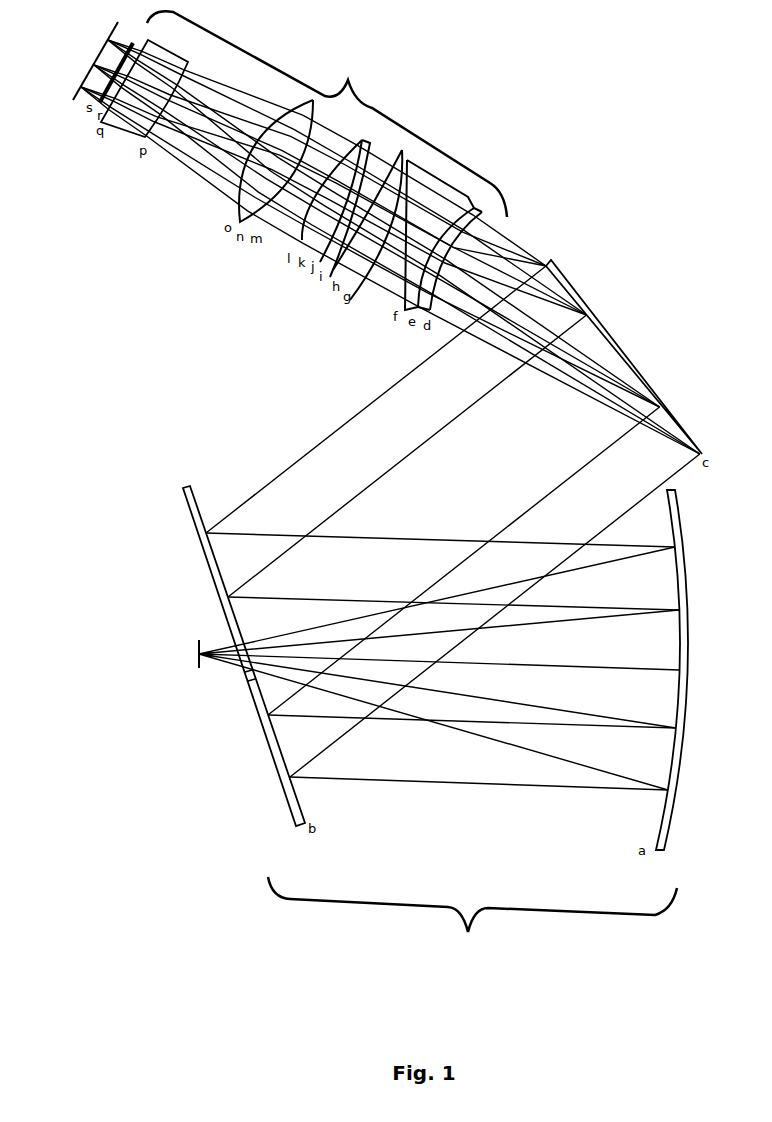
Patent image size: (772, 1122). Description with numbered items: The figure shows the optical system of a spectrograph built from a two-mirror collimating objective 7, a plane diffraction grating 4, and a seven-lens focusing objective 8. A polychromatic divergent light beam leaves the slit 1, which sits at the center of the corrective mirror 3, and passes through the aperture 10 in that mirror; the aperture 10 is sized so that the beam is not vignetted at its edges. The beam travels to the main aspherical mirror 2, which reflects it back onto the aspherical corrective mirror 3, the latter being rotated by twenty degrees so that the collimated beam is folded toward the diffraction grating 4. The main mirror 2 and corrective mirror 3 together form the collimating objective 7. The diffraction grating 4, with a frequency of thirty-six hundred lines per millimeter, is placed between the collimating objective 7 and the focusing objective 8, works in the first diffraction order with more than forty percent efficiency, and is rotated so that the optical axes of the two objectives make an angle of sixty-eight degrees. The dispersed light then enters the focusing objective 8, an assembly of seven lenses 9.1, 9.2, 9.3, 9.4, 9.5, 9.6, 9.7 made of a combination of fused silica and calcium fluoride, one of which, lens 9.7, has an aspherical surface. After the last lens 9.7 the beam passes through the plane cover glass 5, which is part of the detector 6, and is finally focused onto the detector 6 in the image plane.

The slit 1 is at (197, 653).
The main aspherical mirror 2 is at (680, 743).
The corrective aspherical mirror 3 is at (277, 753).
The diffraction grating 4 is at (620, 347).
The cover glass 5 is at (100, 103).
The detector 6 is at (78, 93).
The collimating objective 7 is at (472, 925).
The focusing objective 8 is at (327, 114).
The lens 9.1 is at (437, 317).
The lens 9.2 is at (380, 293).
The lens 9.3 is at (333, 270).
The lens 9.4 is at (277, 233).
The lens 9.5 is at (278, 232).
The lens 9.6 is at (235, 222).
The lens 9.7 is at (127, 128).
The aperture 10 is at (247, 676).